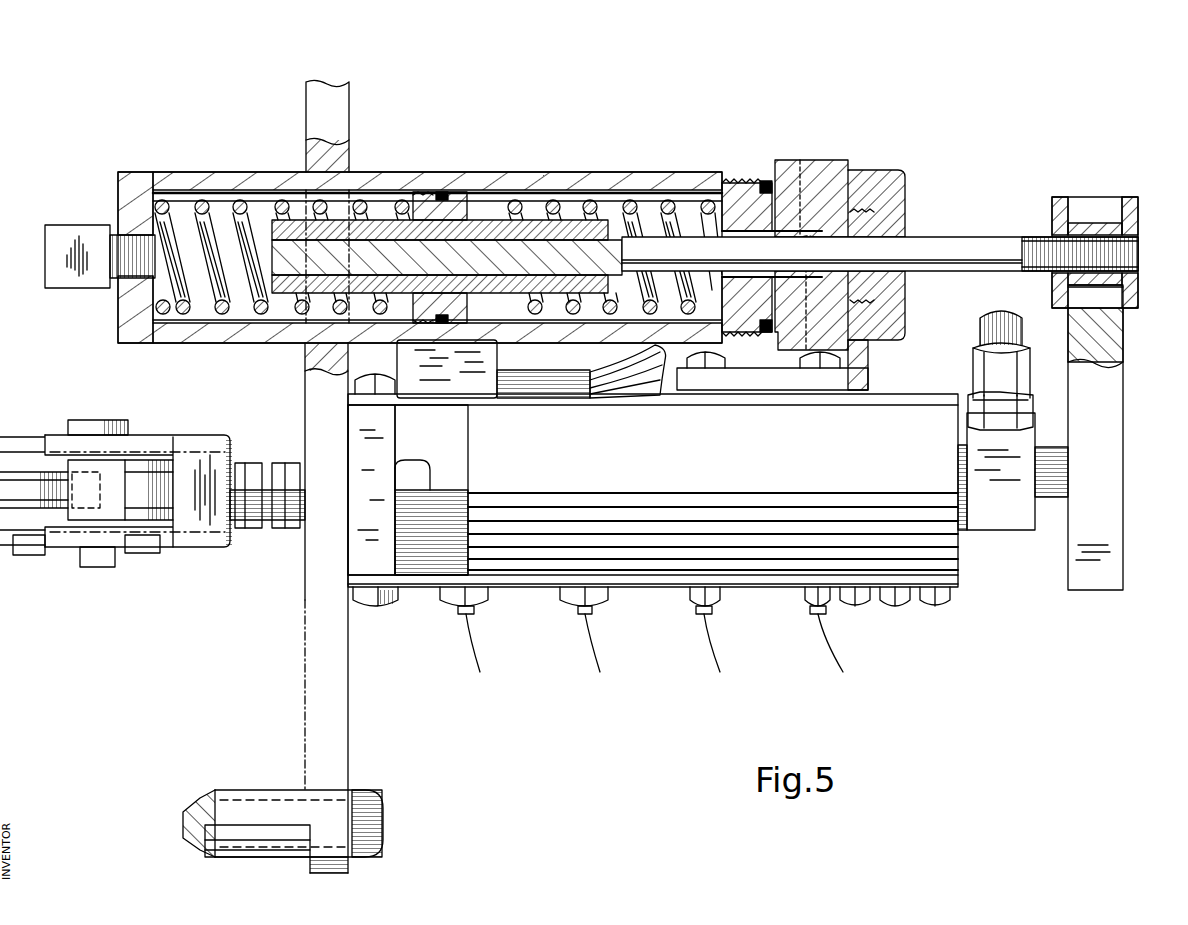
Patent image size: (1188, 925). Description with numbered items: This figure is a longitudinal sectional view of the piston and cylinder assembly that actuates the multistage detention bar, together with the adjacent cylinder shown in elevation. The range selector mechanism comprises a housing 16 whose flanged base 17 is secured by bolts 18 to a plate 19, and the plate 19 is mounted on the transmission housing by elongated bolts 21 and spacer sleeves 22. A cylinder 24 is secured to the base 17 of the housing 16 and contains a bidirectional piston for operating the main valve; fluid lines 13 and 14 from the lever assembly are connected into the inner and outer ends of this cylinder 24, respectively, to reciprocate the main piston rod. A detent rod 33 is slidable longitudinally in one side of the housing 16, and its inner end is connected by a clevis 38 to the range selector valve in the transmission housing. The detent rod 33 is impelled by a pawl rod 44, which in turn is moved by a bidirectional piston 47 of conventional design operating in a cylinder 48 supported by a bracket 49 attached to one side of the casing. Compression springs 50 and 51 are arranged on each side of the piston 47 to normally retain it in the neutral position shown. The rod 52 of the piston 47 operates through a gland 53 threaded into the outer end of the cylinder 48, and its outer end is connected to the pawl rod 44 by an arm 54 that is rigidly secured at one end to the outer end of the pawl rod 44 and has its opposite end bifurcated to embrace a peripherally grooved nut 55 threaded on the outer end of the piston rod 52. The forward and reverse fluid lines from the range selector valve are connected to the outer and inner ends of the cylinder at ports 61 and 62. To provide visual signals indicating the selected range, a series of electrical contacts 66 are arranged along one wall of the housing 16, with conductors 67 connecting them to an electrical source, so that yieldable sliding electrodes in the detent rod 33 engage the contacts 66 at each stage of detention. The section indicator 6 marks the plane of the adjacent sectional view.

The cable conduit 13 is at (630, 398).
The adjusting knob 14 is at (980, 330).
The mounting bolt 16 is at (900, 596).
The end block 17 is at (383, 580).
The coupling 18 is at (412, 462).
The support bar 19 is at (352, 746).
The pivot pin 21 is at (385, 830).
The pivot shaft 22 is at (270, 857).
The motor 24 is at (790, 470).
The drive shaft 33 is at (262, 540).
The universal joint 38 is at (185, 548).
The mounting block 44 is at (1048, 538).
The piston 47 is at (457, 192).
The cylinder housing 48 is at (580, 185).
The mounting plate 49 is at (872, 375).
The compression spring 50 is at (252, 202).
The bushing 51 is at (698, 192).
The piston rod 52 is at (987, 222).
The end cap 53 is at (826, 170).
The bracket 54 is at (1126, 406).
The adjusting nut 55 is at (1064, 200).
The pin 61 is at (806, 170).
The stop block 62 is at (115, 230).
The electrical connector 66 is at (480, 612).
The lead wire 67 is at (478, 648).
The section line 6 is at (1167, 478).